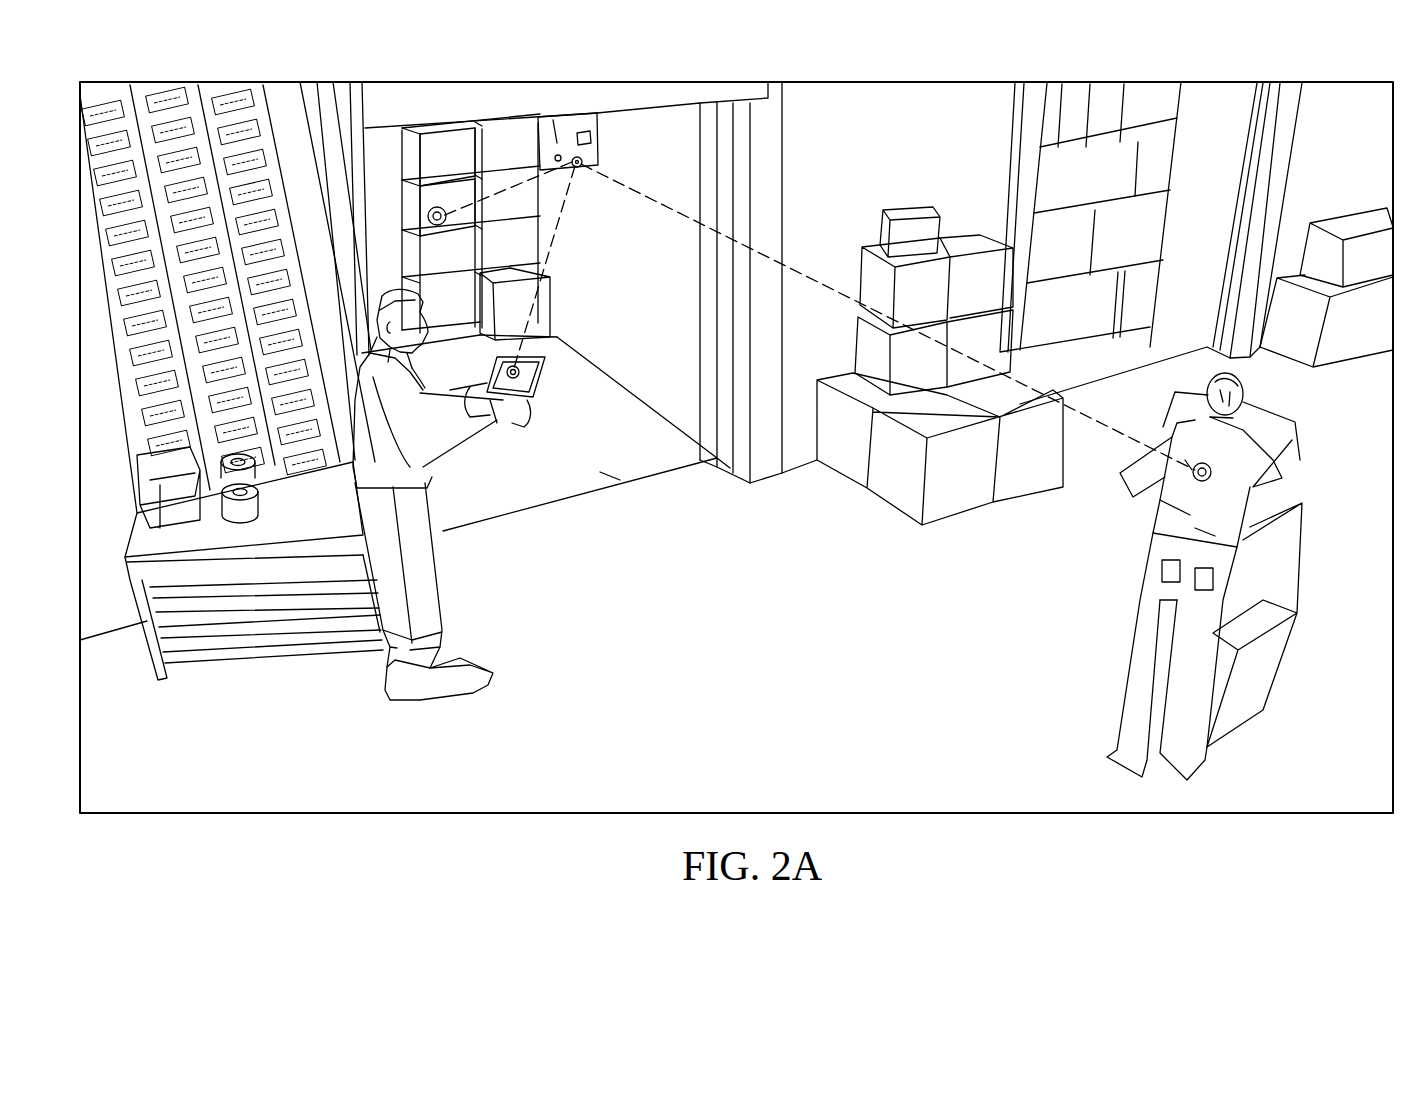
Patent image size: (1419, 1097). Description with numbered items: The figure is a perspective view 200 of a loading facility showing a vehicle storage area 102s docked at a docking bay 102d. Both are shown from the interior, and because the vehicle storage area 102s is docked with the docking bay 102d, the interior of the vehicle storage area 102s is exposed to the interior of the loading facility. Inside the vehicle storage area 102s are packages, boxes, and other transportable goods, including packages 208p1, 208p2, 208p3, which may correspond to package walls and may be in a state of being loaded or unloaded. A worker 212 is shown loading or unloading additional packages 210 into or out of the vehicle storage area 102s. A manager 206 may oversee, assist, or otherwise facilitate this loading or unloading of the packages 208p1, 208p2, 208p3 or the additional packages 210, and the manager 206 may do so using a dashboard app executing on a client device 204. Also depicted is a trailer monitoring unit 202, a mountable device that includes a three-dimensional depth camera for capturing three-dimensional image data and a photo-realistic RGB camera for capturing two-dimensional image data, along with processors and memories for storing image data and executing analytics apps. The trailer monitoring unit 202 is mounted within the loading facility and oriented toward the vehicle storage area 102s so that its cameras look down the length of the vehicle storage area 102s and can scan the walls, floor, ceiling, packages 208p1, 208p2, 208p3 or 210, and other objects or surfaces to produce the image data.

The perspective view 200 is at (736, 447).
The trailer monitoring unit 202 is at (597, 157).
The client device 204 is at (538, 390).
The manager 206 is at (440, 593).
The package 208p1 is at (447, 133).
The package 208p2 is at (430, 210).
The package 208p3 is at (557, 310).
The additional packages 210 is at (1288, 417).
The worker 212 is at (1187, 438).
The docking bay 102d is at (730, 377).
The vehicle storage area 102s is at (603, 472).